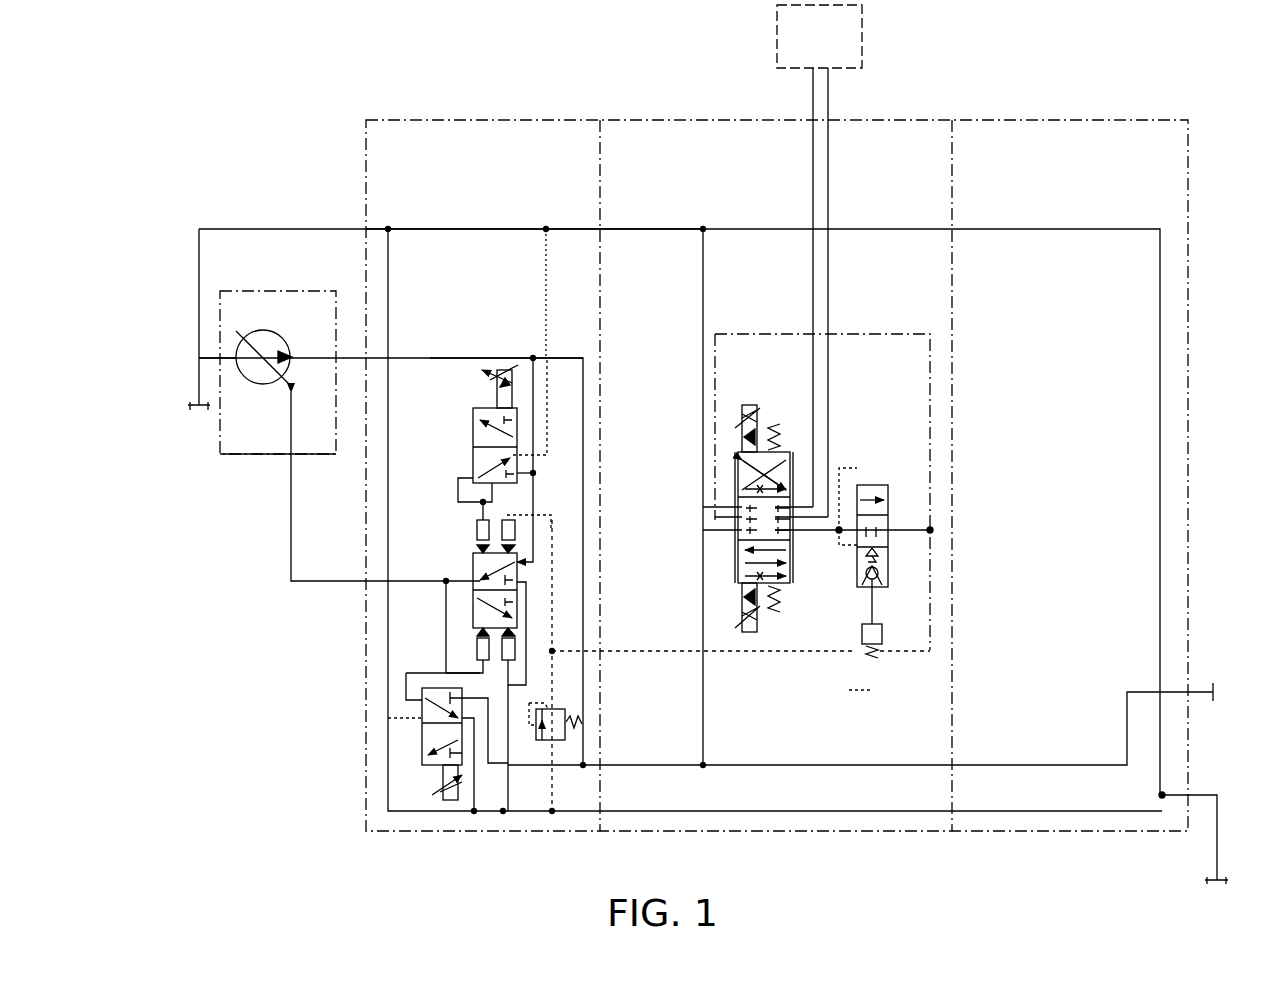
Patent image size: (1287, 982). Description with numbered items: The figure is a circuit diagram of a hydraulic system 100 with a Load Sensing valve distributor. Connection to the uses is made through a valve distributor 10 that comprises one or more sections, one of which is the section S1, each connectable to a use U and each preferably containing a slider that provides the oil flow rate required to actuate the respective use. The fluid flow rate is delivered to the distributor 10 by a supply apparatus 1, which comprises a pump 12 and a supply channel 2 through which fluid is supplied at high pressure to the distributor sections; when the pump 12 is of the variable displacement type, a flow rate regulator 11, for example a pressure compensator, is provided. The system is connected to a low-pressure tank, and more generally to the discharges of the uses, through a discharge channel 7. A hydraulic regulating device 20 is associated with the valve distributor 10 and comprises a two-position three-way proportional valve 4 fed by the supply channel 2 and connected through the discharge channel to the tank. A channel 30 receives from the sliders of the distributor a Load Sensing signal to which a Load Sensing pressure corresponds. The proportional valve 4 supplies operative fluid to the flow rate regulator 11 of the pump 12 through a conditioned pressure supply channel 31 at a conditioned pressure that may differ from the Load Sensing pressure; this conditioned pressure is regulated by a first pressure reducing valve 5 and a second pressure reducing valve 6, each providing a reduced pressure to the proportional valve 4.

The hydraulic system 100 is at (328, 93).
The supply apparatus 1 is at (268, 283).
The flow rate regulator 11 is at (266, 455).
The pump 12 is at (240, 382).
The supply channel 2 is at (447, 358).
The hydraulic regulating device 20 is at (522, 118).
The valve distributor 10 is at (1047, 118).
The discharge channel 7 is at (455, 229).
The first pressure reducing valve 5 is at (474, 445).
The proportional valve 4 is at (474, 600).
The second pressure reducing valve 6 is at (422, 735).
The conditioned pressure supply channel 31 is at (291, 545).
The Load Sensing signal channel 30 is at (650, 650).
The section S1 is at (880, 322).
The use U is at (865, 30).